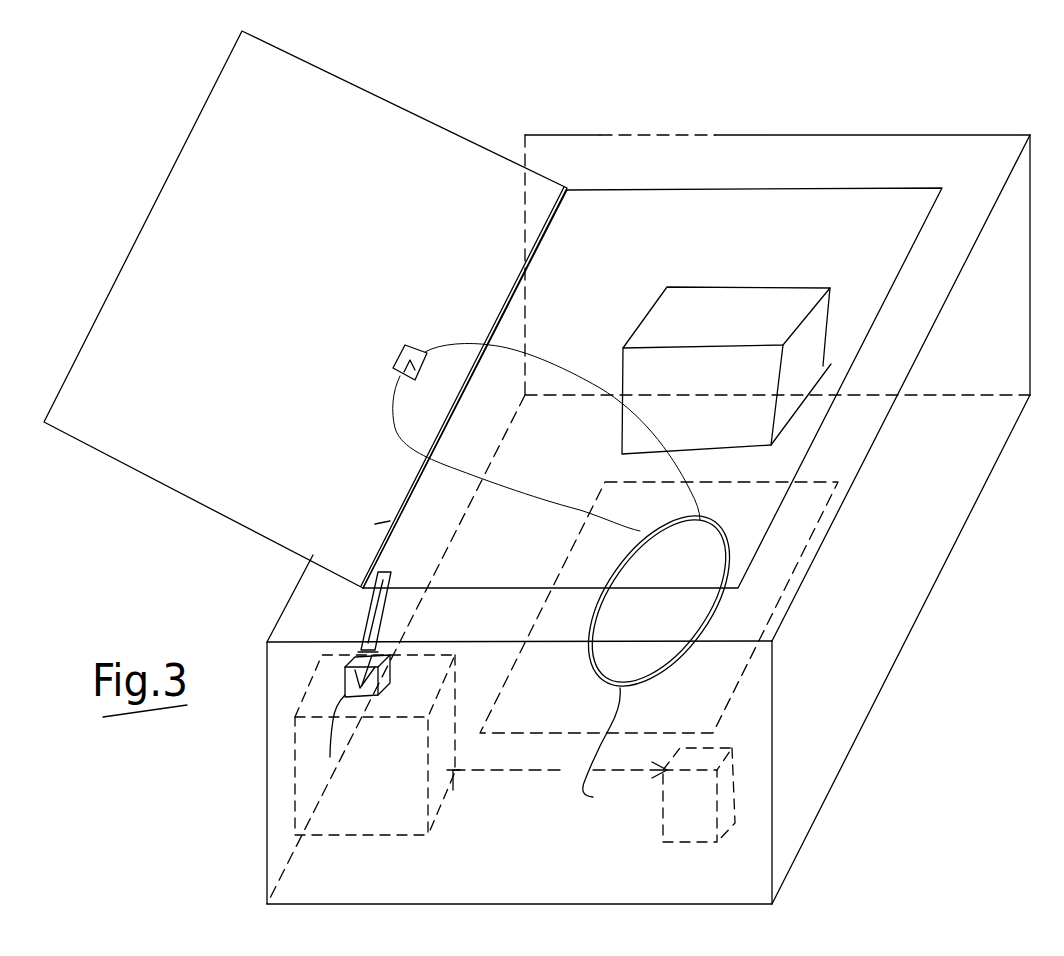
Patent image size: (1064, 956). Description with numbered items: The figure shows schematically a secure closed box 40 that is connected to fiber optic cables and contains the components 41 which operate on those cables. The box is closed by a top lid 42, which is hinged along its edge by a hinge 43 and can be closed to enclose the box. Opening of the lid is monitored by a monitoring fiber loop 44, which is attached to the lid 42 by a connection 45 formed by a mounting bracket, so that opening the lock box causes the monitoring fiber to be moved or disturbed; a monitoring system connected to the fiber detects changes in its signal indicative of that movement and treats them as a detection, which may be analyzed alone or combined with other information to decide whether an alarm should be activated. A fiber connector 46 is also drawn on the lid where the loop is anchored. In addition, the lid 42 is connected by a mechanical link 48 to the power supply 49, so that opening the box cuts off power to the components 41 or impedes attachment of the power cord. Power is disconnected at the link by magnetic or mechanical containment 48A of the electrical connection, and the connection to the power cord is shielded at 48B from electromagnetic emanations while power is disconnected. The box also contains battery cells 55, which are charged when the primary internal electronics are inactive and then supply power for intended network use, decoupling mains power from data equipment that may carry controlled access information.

The secure closed box 40 is at (765, 145).
The components 41 is at (743, 300).
The top lid 42 is at (187, 472).
The hinge 43 is at (533, 257).
The monitoring fiber loop 44 is at (659, 662).
The connection 45 is at (387, 422).
The connector 46 is at (398, 355).
The mechanical link 48 is at (365, 607).
The magnetic or mechanical containment 48A is at (387, 587).
The shielding 48B is at (348, 720).
The power supply 49 is at (403, 798).
The battery cells 55 is at (717, 750).